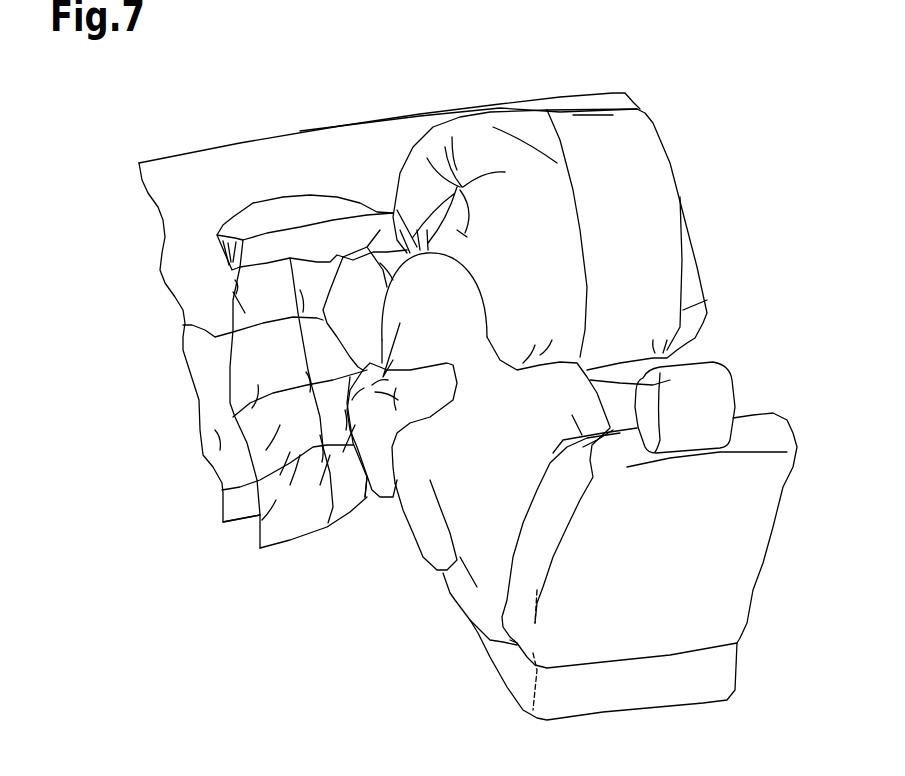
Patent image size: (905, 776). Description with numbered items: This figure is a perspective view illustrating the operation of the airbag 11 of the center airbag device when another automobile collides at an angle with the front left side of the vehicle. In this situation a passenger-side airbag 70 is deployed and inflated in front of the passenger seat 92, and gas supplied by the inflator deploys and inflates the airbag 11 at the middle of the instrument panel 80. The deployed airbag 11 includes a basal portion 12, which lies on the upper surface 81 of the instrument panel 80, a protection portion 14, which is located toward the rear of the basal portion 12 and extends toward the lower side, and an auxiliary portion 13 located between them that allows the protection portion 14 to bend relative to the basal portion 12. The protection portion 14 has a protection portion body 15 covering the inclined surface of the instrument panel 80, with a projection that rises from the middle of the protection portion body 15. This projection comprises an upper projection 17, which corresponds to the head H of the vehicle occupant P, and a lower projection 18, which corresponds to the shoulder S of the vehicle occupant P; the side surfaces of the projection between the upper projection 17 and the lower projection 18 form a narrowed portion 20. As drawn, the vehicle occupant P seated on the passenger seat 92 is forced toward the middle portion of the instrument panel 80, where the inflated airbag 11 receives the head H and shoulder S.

The airbag 11 is at (203, 273).
The basal portion 12 is at (280, 197).
The auxiliary portion 13 is at (347, 215).
The protection portion 14 is at (201, 457).
The protection portion body 15 is at (233, 373).
The upper projection 17 is at (230, 337).
The lower projection 18 is at (222, 490).
The narrowed portion 20 is at (381, 377).
The passenger-side airbag 70 is at (557, 113).
The instrument panel 80 is at (449, 103).
The upper surface 81 is at (400, 118).
The passenger seat 92 is at (758, 563).
The head H is at (461, 263).
The vehicle occupant P is at (455, 604).
The shoulder S is at (365, 498).